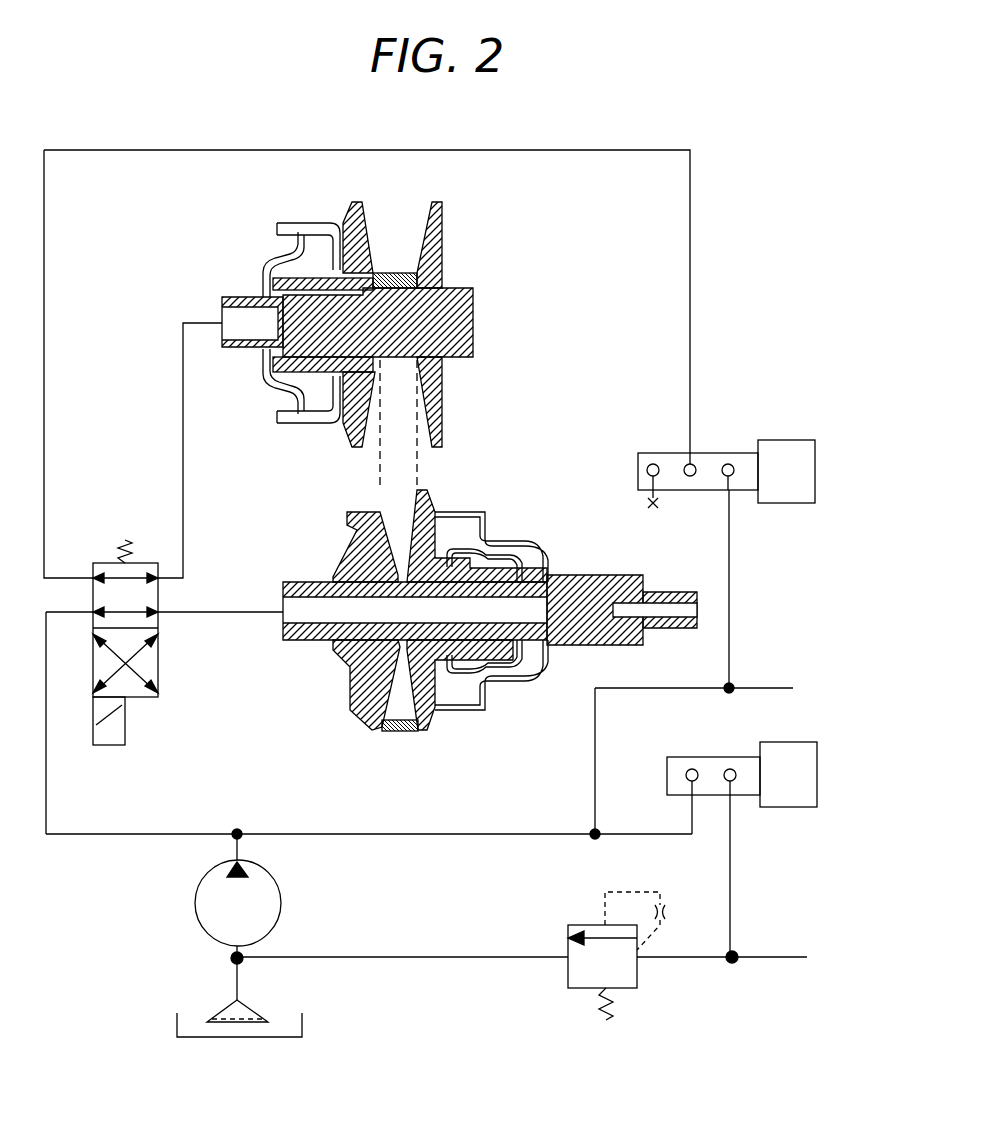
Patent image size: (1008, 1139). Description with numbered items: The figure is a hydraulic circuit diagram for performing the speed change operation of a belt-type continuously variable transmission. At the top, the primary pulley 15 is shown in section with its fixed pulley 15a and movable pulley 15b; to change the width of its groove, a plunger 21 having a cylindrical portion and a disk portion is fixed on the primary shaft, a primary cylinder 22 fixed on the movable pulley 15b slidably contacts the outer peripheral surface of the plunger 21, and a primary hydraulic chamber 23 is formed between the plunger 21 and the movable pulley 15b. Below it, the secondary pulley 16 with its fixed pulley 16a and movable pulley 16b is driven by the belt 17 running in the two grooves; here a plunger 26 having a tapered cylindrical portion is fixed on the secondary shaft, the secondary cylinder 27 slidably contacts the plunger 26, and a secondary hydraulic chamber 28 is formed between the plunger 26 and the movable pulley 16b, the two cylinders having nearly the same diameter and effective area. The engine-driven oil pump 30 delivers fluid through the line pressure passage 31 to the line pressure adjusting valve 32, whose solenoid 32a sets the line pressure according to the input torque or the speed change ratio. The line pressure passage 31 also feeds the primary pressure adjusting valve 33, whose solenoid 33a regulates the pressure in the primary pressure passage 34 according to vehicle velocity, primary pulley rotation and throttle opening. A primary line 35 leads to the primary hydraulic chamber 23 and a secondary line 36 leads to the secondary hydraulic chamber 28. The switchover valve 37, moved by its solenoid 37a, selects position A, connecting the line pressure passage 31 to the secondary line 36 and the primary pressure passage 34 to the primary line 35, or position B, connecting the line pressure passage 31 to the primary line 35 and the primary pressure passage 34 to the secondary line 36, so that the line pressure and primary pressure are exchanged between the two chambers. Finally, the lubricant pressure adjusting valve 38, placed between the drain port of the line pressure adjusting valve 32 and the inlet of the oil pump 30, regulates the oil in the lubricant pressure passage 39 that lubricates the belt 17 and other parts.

The primary pulley 15 is at (382, 324).
The fixed pulley 15a is at (440, 245).
The movable pulley 15b is at (352, 430).
The secondary pulley 16 is at (484, 604).
The fixed pulley 16a is at (340, 653).
The movable pulley 16b is at (432, 734).
The belt 17 is at (398, 737).
The plunger 21 is at (280, 254).
The primary cylinder 22 is at (303, 223).
The primary hydraulic chamber 23 is at (300, 394).
The plunger 26 is at (509, 678).
The secondary cylinder 27 is at (470, 510).
The secondary hydraulic chamber 28 is at (487, 549).
The oil pump 30 is at (206, 933).
The line pressure passage 31 is at (373, 834).
The line pressure adjusting valve 32 is at (712, 757).
The solenoid 32a is at (812, 770).
The primary pressure adjusting valve 33 is at (725, 453).
The solenoid 33a is at (810, 455).
The primary pressure passage 34 is at (640, 150).
The primary line 35 is at (183, 413).
The secondary line 36 is at (243, 612).
The switchover valve 37 is at (148, 697).
The solenoid 37a is at (110, 748).
The lubricant pressure adjusting valve 38 is at (578, 925).
The lubricant pressure passage 39 is at (732, 900).